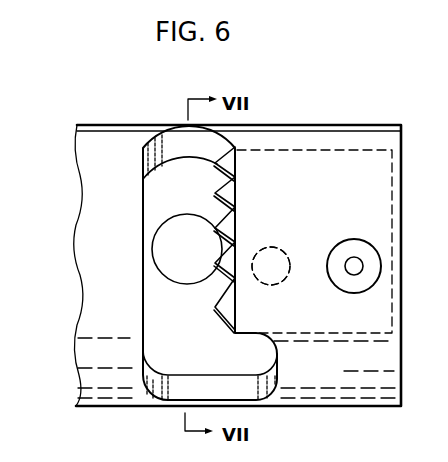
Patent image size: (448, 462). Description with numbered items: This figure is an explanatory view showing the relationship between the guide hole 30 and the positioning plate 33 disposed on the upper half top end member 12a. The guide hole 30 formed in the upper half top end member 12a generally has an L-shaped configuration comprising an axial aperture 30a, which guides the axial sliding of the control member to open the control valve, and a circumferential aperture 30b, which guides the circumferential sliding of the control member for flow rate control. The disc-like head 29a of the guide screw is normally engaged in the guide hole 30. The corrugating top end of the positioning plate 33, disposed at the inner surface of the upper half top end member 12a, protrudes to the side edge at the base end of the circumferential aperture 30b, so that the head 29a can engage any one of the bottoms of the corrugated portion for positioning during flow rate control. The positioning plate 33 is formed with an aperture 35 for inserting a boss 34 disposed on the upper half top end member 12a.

The upper half top end member 12a is at (87, 167).
The head of the guide screw 29a is at (160, 250).
The guide hole 30 is at (185, 244).
The axial aperture 30a is at (254, 353).
The circumferential aperture 30b is at (148, 187).
The positioning plate 33 is at (322, 150).
The boss 34 is at (282, 278).
The aperture 35 is at (271, 247).